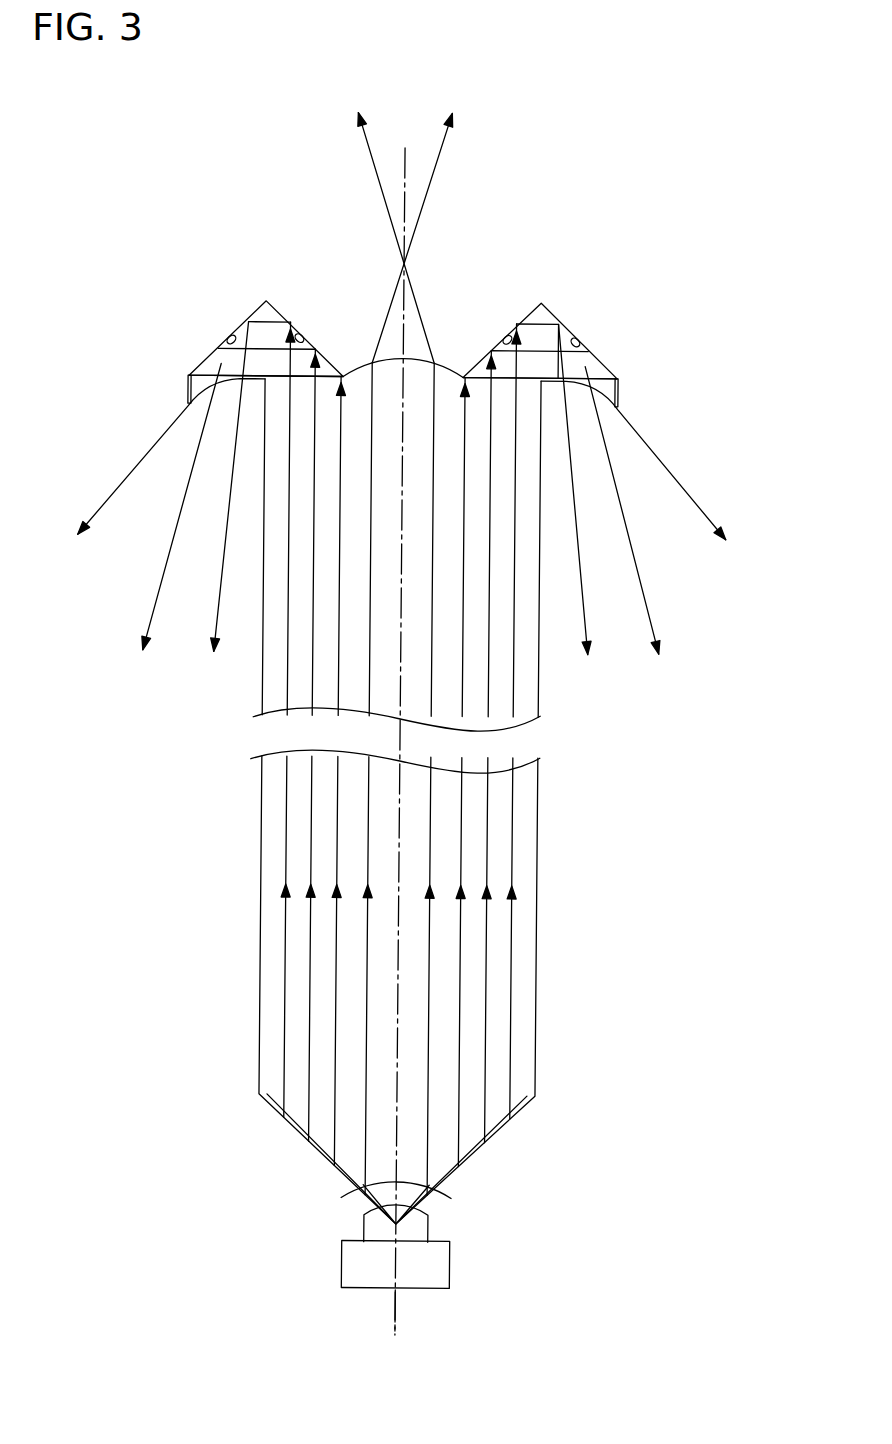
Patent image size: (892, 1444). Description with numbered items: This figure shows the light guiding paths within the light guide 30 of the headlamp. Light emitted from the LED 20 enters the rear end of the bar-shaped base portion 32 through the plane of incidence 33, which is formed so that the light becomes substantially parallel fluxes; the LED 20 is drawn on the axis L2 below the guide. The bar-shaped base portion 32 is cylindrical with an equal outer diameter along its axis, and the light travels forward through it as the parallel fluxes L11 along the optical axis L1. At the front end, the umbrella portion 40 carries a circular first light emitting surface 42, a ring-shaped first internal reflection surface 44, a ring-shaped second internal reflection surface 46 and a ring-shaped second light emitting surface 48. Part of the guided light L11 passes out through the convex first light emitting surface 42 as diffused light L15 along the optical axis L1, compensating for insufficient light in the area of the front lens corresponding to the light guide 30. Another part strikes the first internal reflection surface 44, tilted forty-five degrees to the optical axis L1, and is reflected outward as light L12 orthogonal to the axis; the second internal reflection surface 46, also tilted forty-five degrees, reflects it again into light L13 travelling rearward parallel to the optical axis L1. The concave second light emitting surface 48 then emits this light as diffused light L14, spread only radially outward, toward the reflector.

The LED 20 is at (458, 1246).
The light guide 30 is at (399, 800).
The bar-shaped base portion 32 is at (262, 826).
The plane of incidence 33 is at (367, 1203).
The umbrella portion 40 is at (411, 458).
The first light emitting surface 42 is at (455, 369).
The first internal reflection surface 44 is at (418, 317).
The second internal reflection surface 46 is at (225, 334).
The second light emitting surface 48 is at (205, 398).
The optical axis L1 is at (398, 860).
The optical axis of light source L2 is at (401, 1316).
The guided light L11 is at (303, 958).
The internally reflected light L12 is at (259, 344).
The rearward parallel light L13 is at (200, 362).
The diffused light L14 is at (397, 487).
The diffused light L15 is at (395, 223).